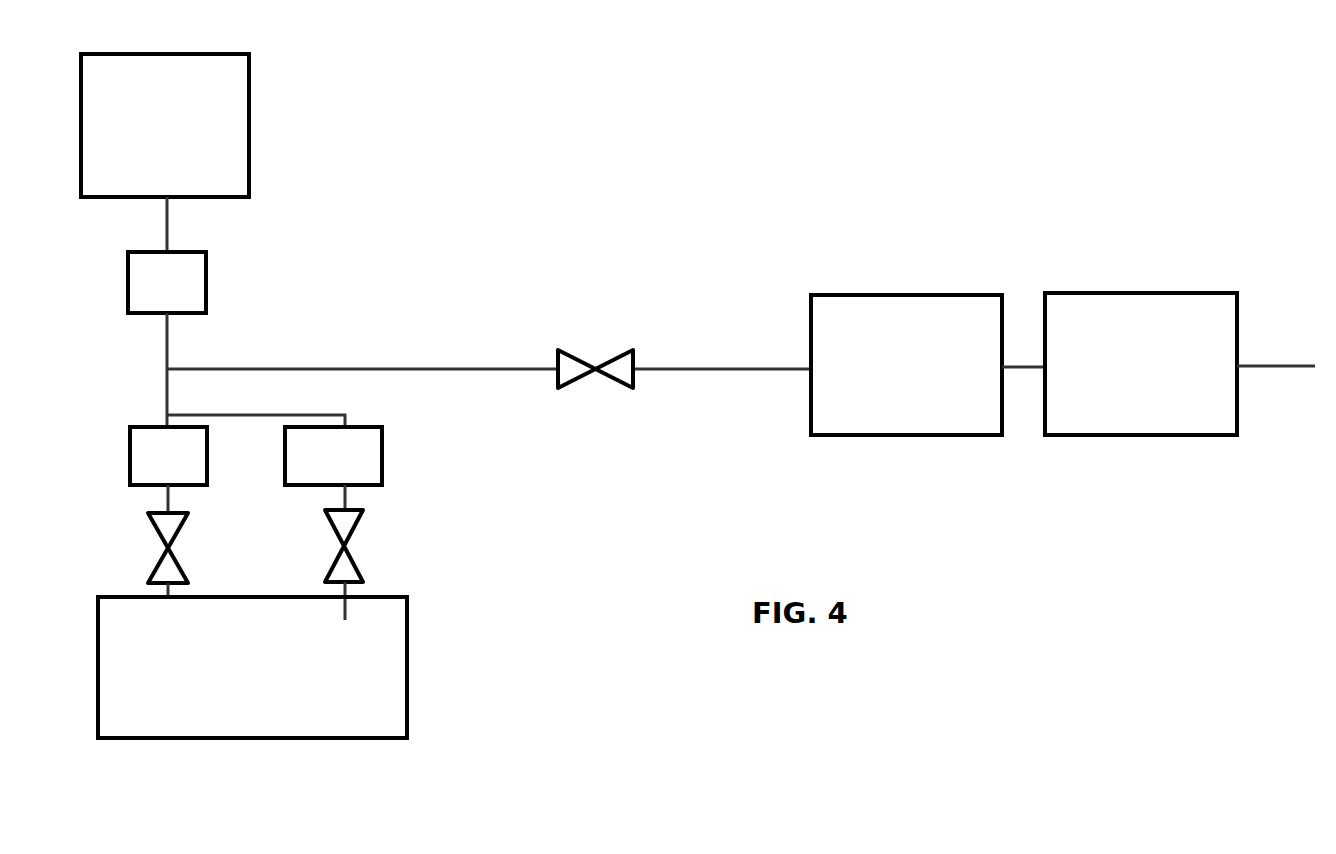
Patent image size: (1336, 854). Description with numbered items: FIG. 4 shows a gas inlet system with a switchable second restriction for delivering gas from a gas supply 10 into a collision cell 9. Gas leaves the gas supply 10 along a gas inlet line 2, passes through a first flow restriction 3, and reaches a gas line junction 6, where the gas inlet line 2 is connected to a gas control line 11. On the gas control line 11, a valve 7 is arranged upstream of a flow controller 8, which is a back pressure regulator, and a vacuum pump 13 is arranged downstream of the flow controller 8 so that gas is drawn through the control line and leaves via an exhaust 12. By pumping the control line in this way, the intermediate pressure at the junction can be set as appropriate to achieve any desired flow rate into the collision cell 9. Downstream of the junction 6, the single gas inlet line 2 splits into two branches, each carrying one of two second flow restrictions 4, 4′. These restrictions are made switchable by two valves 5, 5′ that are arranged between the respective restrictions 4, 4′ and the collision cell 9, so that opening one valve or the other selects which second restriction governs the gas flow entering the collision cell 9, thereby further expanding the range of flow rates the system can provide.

The gas supply 10 is at (195, 125).
The gas inlet line 2 is at (183, 224).
The first flow restriction 3 is at (180, 282).
The gas line junction 6 is at (233, 370).
The gas control line 11 is at (489, 349).
The valve 7 is at (595, 351).
The second flow restriction 4 is at (180, 456).
The second flow restriction 4′ is at (350, 456).
The valve 5 is at (185, 541).
The valve 5′ is at (363, 552).
The collision cell 9 is at (271, 667).
The flow controller 8 is at (928, 343).
The vacuum pump 13 is at (1141, 343).
The exhaust 12 is at (1276, 344).